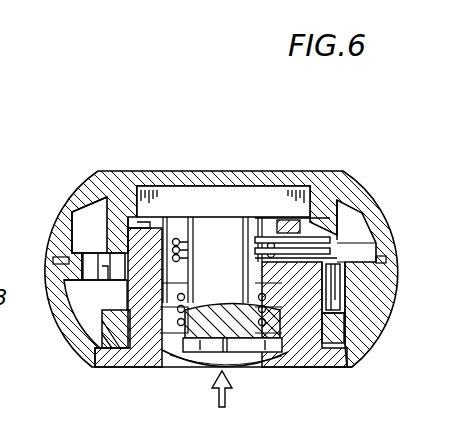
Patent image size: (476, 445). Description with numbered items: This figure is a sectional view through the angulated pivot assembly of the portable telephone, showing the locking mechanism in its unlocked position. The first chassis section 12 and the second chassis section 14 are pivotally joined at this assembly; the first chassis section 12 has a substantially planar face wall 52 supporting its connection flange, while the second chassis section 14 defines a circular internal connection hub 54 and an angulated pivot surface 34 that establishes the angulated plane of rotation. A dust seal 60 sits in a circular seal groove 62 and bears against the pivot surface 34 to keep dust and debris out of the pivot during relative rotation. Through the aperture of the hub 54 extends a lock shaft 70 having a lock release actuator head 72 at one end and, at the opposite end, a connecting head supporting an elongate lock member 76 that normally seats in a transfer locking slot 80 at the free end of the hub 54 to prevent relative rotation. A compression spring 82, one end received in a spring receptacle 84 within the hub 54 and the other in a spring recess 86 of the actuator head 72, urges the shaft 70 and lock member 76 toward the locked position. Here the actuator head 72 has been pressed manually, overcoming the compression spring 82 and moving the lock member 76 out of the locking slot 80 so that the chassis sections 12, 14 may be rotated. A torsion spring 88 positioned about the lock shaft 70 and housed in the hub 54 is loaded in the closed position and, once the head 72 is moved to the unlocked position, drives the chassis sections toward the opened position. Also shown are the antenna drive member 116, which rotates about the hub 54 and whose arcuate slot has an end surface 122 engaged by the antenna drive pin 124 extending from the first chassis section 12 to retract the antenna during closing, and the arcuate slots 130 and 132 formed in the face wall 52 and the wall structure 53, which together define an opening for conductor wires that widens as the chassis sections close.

The first chassis section 12 is at (83, 186).
The second chassis section 14 is at (358, 366).
The angulated pivot surface 34 is at (368, 257).
The face wall 52 is at (347, 257).
The wall structure 53 is at (336, 296).
The connection hub 54 is at (93, 325).
The dust seal 60 is at (387, 259).
The seal groove 62 is at (57, 256).
The lock shaft 70 is at (228, 333).
The lock release actuator head 72 is at (193, 371).
The lock member 76 is at (172, 197).
The transfer locking slot 80 is at (128, 217).
The compression spring 82 is at (283, 362).
The spring receptacle 84 is at (130, 336).
The spring recess 86 is at (173, 328).
The torsion spring 88 is at (267, 237).
The antenna drive member 116 is at (331, 350).
The end surface 122 is at (341, 327).
The antenna drive pin 124 is at (346, 318).
The arcuate slot 130 is at (90, 256).
The arcuate slot 132 is at (68, 297).